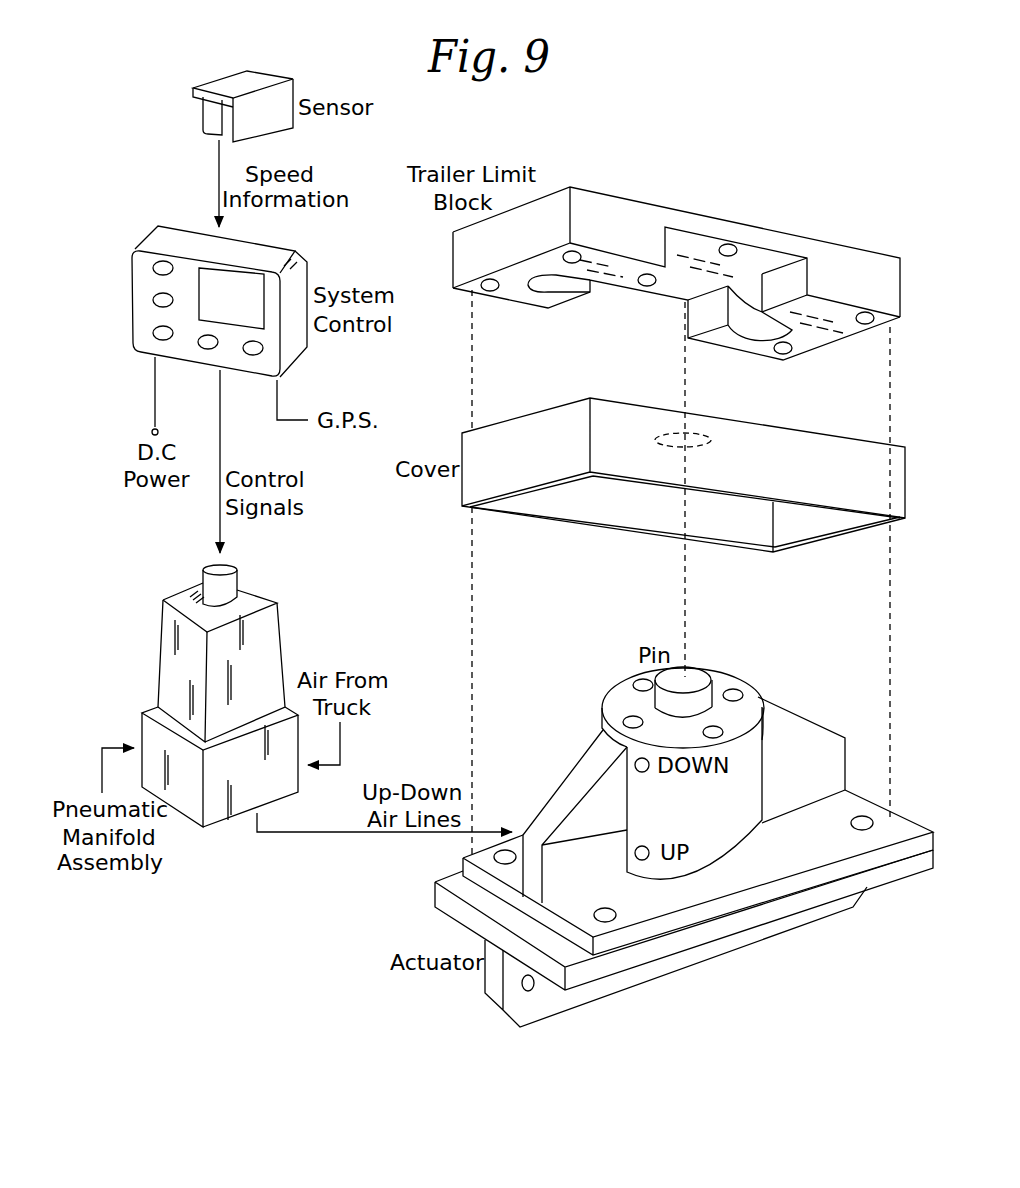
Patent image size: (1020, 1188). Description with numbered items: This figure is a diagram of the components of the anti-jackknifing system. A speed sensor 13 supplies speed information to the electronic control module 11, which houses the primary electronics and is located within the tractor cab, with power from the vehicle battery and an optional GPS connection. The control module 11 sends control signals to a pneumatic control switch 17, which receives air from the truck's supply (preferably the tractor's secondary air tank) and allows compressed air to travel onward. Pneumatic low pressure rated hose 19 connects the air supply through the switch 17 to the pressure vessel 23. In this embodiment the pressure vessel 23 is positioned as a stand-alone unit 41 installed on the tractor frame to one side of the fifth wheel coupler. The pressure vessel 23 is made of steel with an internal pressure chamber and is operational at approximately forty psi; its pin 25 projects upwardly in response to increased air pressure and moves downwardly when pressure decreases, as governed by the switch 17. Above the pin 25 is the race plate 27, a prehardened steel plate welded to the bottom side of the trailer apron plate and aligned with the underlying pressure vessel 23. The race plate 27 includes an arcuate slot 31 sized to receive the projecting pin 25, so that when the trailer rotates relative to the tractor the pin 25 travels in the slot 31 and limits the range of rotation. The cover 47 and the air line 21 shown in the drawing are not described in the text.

The speed sensor 13 is at (260, 68).
The control module 11 is at (137, 315).
The control switch 17 is at (275, 635).
The air supply line from truck 21 is at (340, 747).
The pneumatic low pressure rated hose 19 is at (373, 833).
The race plate 27 is at (893, 258).
The arcuate slot 31 is at (582, 293).
The cover 47 is at (898, 443).
The stand-alone unit 41 is at (568, 695).
The pressure vessel 23 is at (716, 818).
The pin 25 is at (693, 668).